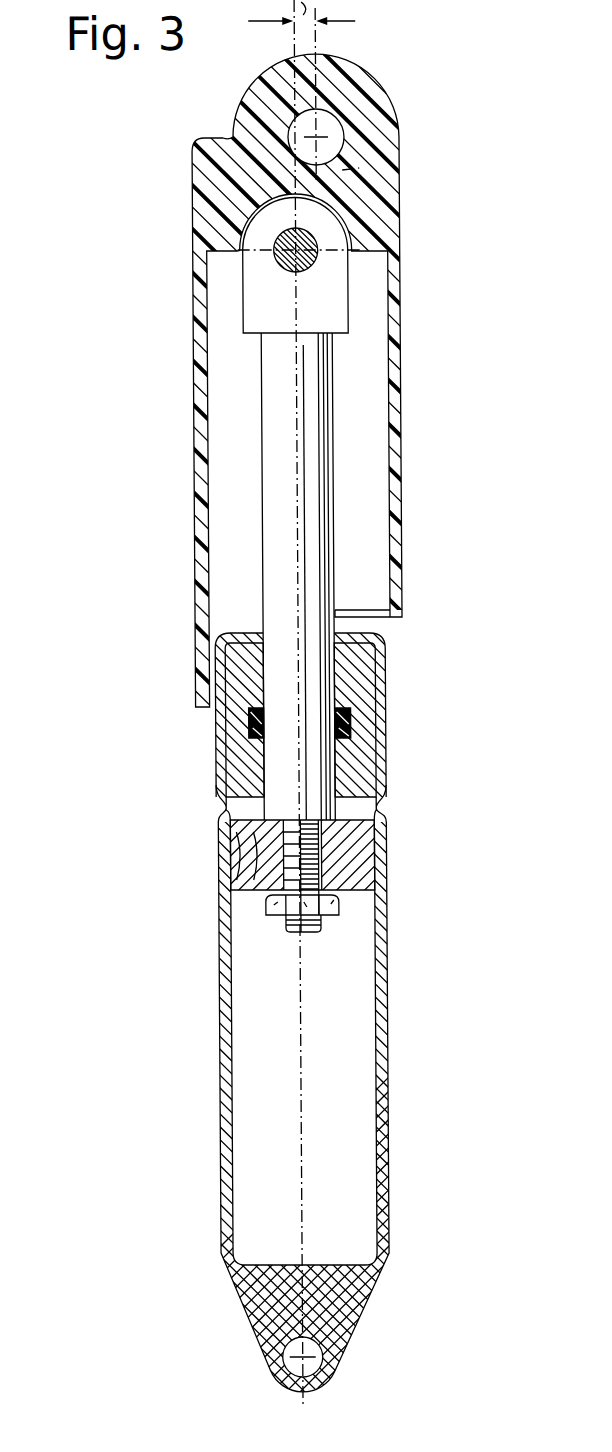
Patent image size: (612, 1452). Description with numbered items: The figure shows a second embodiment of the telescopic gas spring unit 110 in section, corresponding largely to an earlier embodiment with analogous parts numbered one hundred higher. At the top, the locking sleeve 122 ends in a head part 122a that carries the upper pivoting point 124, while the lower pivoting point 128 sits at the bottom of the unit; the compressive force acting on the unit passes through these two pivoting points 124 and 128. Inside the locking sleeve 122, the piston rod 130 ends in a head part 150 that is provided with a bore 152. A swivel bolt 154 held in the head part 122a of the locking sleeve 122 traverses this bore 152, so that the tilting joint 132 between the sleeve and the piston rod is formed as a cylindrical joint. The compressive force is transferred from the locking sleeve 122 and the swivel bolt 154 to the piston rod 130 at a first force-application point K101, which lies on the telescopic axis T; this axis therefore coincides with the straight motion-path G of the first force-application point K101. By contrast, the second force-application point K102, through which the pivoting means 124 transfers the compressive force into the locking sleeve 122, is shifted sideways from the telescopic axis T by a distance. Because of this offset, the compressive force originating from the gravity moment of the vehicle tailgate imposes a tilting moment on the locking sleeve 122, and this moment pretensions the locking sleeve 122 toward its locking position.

The gas spring unit 110 is at (153, 387).
The locking sleeve 122 is at (274, 359).
The head part of the locking sleeve 122a is at (199, 152).
The pivoting point 124 is at (319, 134).
The pivoting point 128 is at (306, 1356).
The piston rod 130 is at (320, 580).
The tilting joint 132 is at (322, 250).
The head part of the piston rod 150 is at (333, 315).
The bore 152 is at (277, 262).
The swivel bolt 154 is at (243, 210).
The telescopic axis T is at (297, 477).
The straight motion-path of the first force-application point G is at (296, 580).
The first force-application point K101 is at (352, 284).
The second force-application point K102 is at (357, 163).